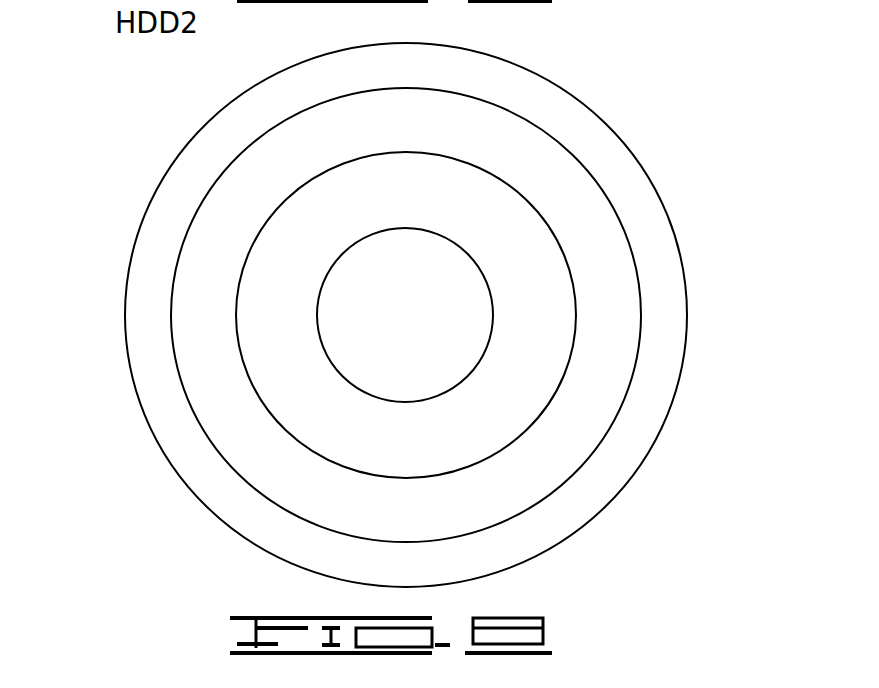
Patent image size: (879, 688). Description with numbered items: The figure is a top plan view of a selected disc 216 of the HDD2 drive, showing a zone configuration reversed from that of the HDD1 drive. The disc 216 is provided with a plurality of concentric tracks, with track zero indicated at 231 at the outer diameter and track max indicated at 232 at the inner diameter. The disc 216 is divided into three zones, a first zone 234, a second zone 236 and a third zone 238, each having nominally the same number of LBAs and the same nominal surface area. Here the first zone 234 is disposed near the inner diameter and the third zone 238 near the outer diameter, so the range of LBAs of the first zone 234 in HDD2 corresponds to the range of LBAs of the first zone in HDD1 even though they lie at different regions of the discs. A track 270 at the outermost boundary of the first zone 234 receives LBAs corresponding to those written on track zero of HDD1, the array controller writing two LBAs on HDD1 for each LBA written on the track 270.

The disc 216 is at (172, 99).
The ZONE 3 238 is at (484, 73).
The ZONE 2 236 is at (476, 126).
The ZONE 1 234 is at (476, 203).
The track max 232 is at (337, 372).
The outermost track (track 0) 231 is at (374, 586).
The track at the outermost boundary of ZONE 1 270 is at (435, 476).